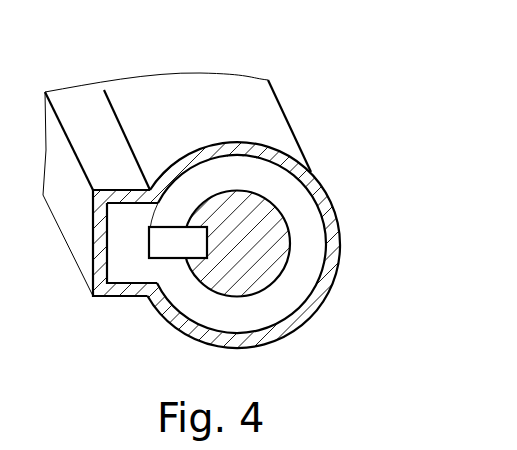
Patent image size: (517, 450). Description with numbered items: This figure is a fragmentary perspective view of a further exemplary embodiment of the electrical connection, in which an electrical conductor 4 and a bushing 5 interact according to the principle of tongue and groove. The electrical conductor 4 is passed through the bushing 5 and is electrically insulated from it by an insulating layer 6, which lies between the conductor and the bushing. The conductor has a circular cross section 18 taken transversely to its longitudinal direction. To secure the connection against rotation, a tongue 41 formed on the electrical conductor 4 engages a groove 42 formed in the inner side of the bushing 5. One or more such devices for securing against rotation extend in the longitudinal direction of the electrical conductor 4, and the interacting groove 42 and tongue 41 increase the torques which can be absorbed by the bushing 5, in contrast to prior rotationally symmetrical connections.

The electrical conductor 4 is at (237, 240).
The bushing 5 is at (218, 143).
The insulating layer 6 is at (306, 243).
The circular cross section 18 is at (128, 208).
The tongue 41 is at (167, 170).
The groove 42 is at (106, 246).